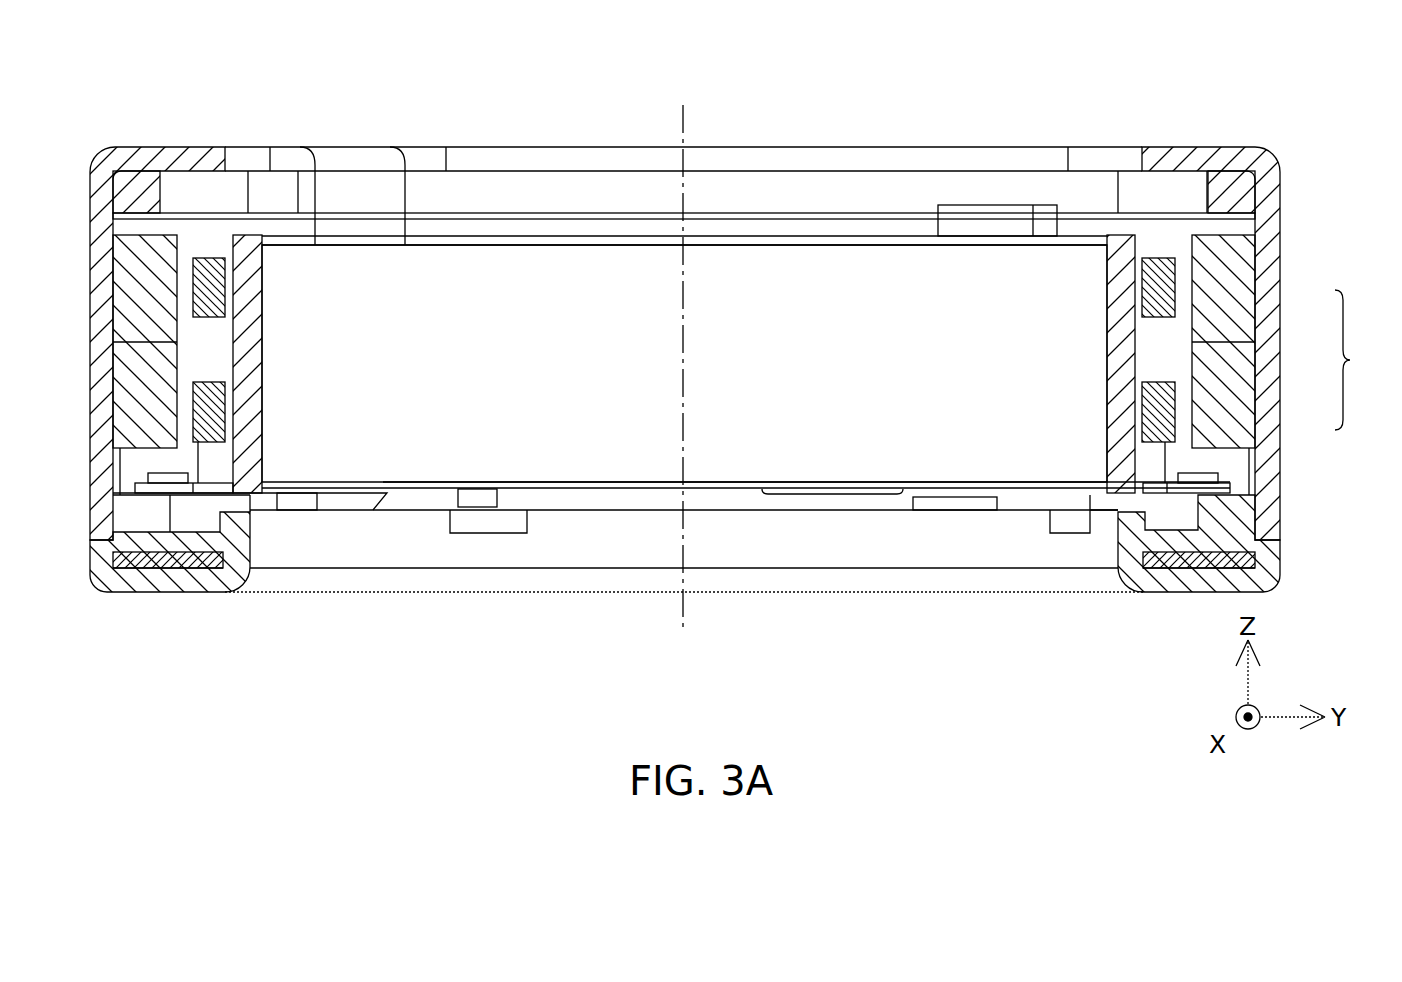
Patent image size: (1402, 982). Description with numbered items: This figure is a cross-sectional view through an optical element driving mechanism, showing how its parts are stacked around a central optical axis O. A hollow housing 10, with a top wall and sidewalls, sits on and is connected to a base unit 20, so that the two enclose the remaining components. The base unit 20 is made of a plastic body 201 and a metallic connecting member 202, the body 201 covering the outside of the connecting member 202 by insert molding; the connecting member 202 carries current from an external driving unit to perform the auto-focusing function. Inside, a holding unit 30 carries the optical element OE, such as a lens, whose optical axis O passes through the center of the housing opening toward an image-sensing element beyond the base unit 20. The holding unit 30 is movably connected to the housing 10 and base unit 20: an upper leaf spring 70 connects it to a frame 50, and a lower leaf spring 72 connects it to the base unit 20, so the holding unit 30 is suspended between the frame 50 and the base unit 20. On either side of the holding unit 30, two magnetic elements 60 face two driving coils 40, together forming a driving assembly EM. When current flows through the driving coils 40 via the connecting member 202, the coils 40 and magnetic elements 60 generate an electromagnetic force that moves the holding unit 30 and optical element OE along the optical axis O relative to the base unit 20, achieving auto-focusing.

The housing 10 is at (100, 182).
The base unit 20 is at (686, 590).
The body 201 is at (113, 576).
The connecting member 202 is at (183, 560).
The holding unit 30 is at (215, 366).
The driving coils 40 is at (210, 410).
The frame 50 is at (139, 190).
The magnetic elements 60 is at (130, 290).
The upper leaf spring 70 is at (150, 219).
The lower leaf spring 72 is at (140, 488).
The optical element OE is at (876, 437).
The driving assembly EM is at (1350, 360).
The optical axis O is at (682, 351).